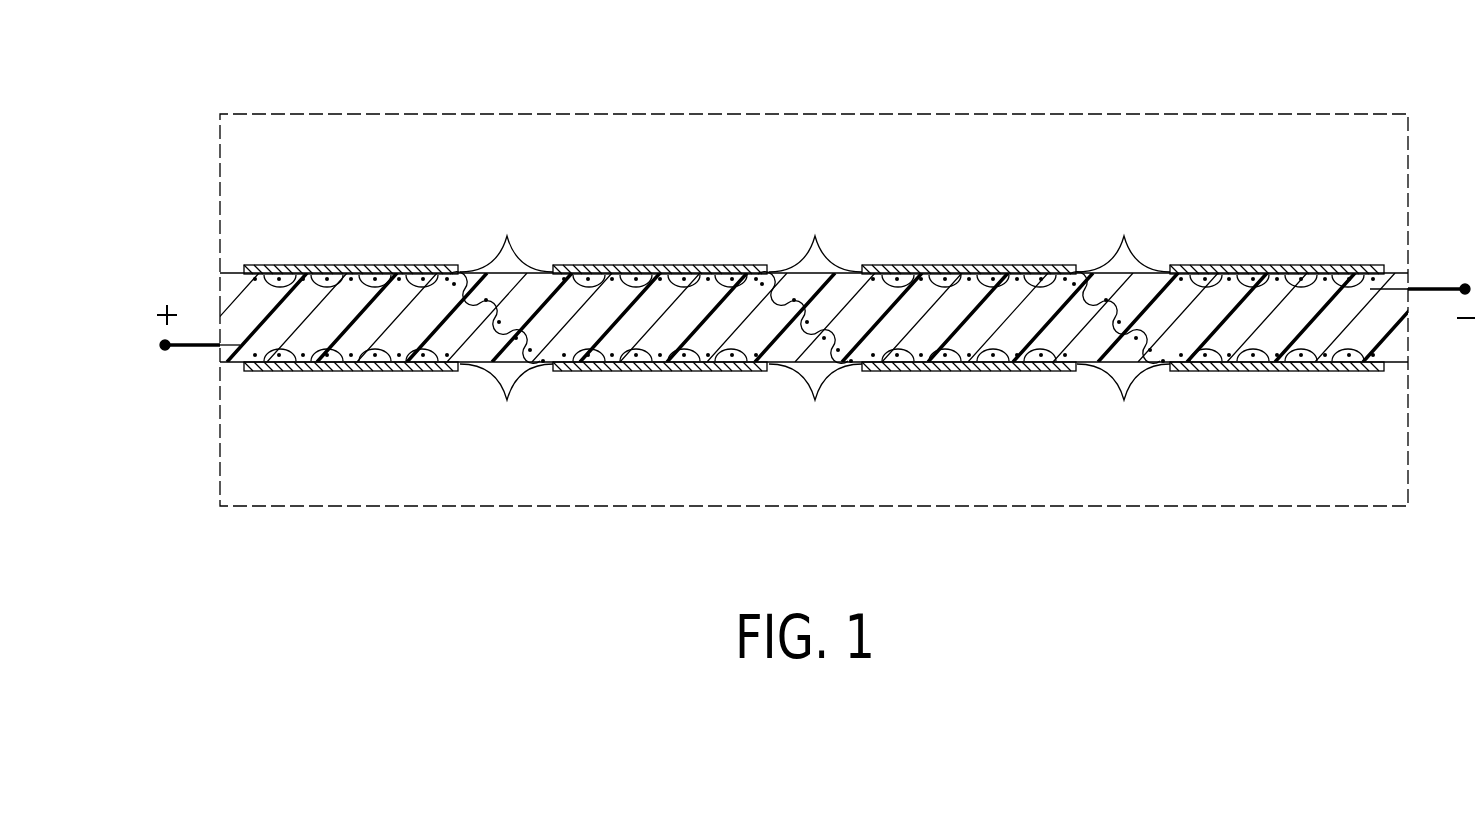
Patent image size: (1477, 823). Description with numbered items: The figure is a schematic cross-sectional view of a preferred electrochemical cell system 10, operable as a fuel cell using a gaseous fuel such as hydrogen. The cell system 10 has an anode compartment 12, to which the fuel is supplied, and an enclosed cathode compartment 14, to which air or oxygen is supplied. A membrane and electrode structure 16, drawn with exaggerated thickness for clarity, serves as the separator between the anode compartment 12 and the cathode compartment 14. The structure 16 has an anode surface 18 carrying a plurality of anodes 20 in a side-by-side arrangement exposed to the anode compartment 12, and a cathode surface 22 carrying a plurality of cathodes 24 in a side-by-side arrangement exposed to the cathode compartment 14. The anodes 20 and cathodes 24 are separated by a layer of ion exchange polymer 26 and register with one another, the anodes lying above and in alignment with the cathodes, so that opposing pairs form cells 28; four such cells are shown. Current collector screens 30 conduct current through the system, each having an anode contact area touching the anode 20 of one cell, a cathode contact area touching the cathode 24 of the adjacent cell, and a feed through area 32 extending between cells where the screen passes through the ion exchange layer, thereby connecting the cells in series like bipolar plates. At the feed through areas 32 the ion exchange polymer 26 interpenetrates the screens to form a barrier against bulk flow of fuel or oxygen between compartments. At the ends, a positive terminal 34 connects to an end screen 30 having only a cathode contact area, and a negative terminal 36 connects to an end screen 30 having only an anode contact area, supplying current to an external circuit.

The electrochemical cell system 10 is at (702, 83).
The anode compartment 12 is at (393, 108).
The cathode compartment 14 is at (388, 512).
The membrane and electrode structure 16 is at (697, 187).
The anode surface 18 is at (322, 230).
The anodes 20 is at (815, 238).
The cathode surface 22 is at (317, 396).
The cathodes 24 is at (815, 398).
The ion exchange polymer 26 is at (220, 297).
The cells 28 is at (351, 394).
The current collector screens 30 is at (338, 271).
The feed through area 32 is at (497, 372).
The positive terminal 34 is at (153, 352).
The negative terminal 36 is at (1467, 282).